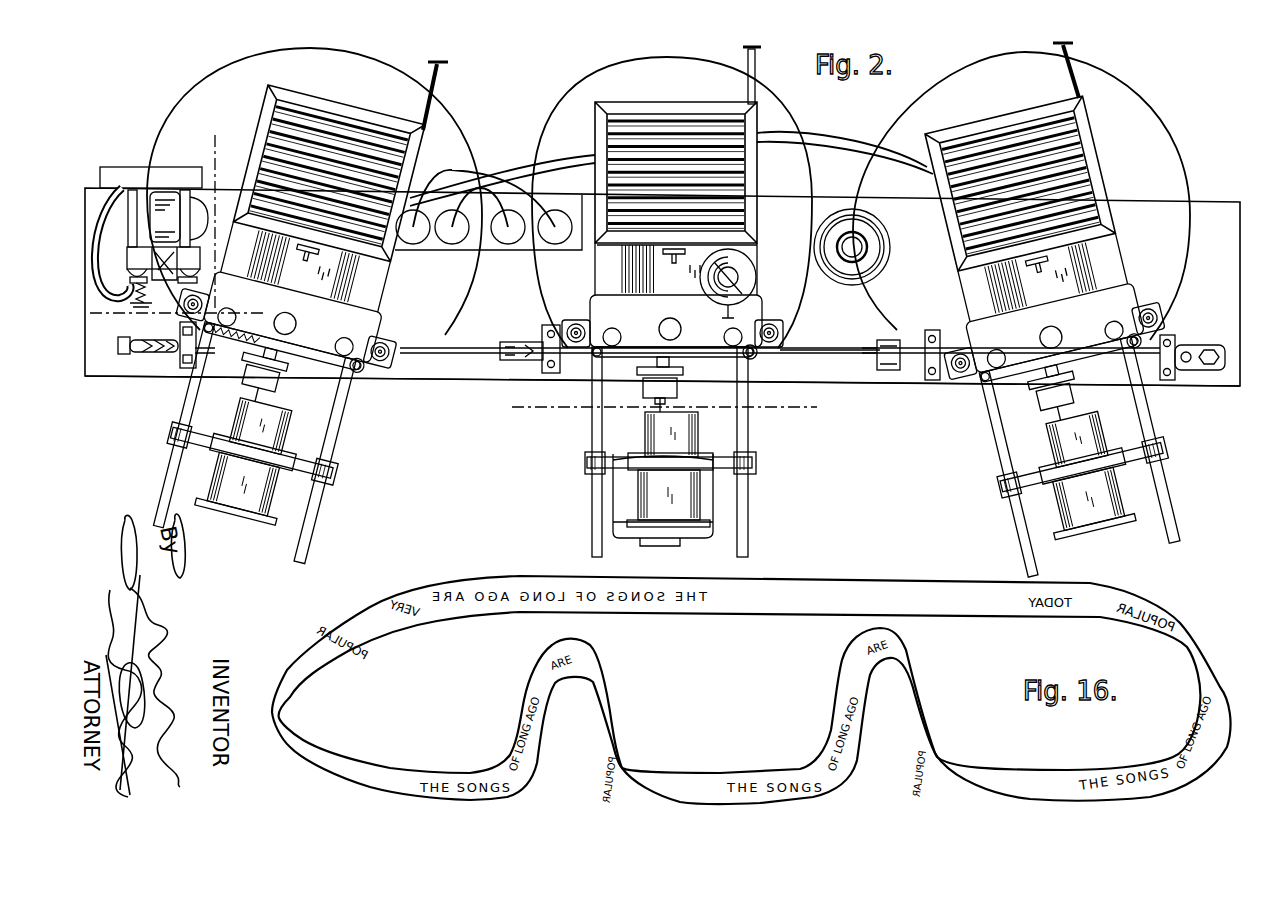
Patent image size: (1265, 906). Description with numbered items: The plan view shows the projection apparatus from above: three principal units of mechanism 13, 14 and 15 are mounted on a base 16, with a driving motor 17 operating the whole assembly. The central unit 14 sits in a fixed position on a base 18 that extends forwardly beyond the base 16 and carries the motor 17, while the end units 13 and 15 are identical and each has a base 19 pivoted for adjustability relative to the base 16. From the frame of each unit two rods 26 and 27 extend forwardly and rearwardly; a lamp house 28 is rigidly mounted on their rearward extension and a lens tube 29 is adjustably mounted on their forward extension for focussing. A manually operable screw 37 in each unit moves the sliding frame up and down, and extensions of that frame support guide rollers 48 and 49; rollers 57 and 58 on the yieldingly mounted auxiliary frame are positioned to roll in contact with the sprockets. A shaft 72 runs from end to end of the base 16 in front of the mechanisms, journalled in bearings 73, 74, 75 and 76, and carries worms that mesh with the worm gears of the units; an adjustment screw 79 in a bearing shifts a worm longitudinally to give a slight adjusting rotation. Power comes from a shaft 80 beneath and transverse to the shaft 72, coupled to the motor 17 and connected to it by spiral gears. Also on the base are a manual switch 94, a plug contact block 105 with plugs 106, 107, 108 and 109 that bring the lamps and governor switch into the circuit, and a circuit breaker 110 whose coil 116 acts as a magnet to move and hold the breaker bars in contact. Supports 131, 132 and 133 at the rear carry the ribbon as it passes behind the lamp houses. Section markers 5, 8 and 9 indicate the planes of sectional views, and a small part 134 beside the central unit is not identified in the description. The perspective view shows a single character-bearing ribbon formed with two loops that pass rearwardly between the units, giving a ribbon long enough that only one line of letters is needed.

The section line 5- 5 is at (523, 437).
The section line 8- 8 is at (240, 148).
The section line 9- 9 is at (100, 314).
The unit of mechanism 13 is at (365, 382).
The central unit 14 is at (763, 433).
The unit of mechanism 15 is at (1167, 403).
The base 16 is at (447, 372).
The driving motor 17 is at (613, 490).
The base of central unit 18 is at (600, 268).
The base of end unit 19 is at (375, 288).
The rod 26 is at (168, 473).
The rod 27 is at (317, 502).
The lamp house 28 is at (267, 107).
The lens tube 29 is at (237, 508).
The manually operable screw 37 is at (299, 319).
The guide roller 48 is at (577, 328).
The guide roller 49 is at (389, 342).
The roller 57 is at (207, 353).
The roller 58 is at (363, 368).
The shaft 72 is at (832, 355).
The bearing 73 is at (180, 366).
The bearing 74 is at (540, 363).
The bearing 75 is at (928, 376).
The bearing 76 is at (1173, 350).
The adjustment screw 79 is at (128, 354).
The shaft 80 is at (667, 405).
The manual switch 94 is at (845, 283).
The plug contact block 105 is at (486, 246).
The plug 106 is at (555, 245).
The plug 107 is at (504, 182).
The plug 108 is at (452, 245).
The plug 109 is at (413, 245).
The circuit breaker 110 is at (125, 182).
The coil of circuit breaker 116 is at (205, 213).
The support 131 is at (447, 75).
The support 132 is at (747, 56).
The support 133 is at (1077, 66).
The switch 134 is at (733, 274).